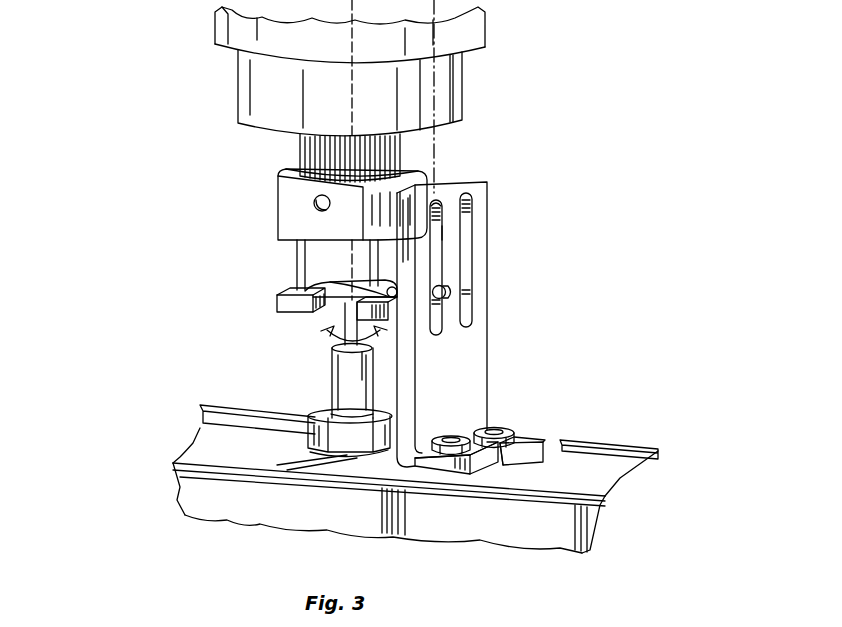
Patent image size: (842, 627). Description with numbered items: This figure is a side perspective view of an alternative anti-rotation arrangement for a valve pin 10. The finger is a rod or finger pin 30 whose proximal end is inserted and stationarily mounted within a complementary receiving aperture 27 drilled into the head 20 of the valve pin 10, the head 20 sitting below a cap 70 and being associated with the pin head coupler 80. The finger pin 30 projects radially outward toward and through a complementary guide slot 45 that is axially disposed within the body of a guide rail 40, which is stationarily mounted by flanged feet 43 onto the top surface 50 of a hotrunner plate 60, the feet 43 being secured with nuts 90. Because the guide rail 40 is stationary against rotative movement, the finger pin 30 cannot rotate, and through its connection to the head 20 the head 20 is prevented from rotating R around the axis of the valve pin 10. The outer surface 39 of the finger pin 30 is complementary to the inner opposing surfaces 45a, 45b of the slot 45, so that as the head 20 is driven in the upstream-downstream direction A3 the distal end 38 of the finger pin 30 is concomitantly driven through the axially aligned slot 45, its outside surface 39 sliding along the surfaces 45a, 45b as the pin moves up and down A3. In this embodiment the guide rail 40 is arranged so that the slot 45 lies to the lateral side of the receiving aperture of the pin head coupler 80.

The knob cap 70 is at (238, 89).
The upstream-downstream direction A3 is at (437, 92).
The pin head coupler 80 is at (276, 192).
The head 20 is at (312, 257).
The finger pin 30 is at (368, 283).
The receiving aperture 27 is at (282, 292).
The valve pin 10 is at (322, 320).
The rotative movement R is at (314, 332).
The outer surface 39 is at (396, 298).
The guide rail 40 is at (497, 383).
The guide slot 45 is at (451, 254).
The inner opposing surface 45a is at (440, 233).
The inner opposing surface 45b is at (438, 228).
The distal end 38 is at (446, 301).
The flanged feet 43 is at (544, 446).
The nuts 90 is at (512, 430).
The top surface 50 is at (585, 476).
The hotrunner plate 60 is at (655, 455).